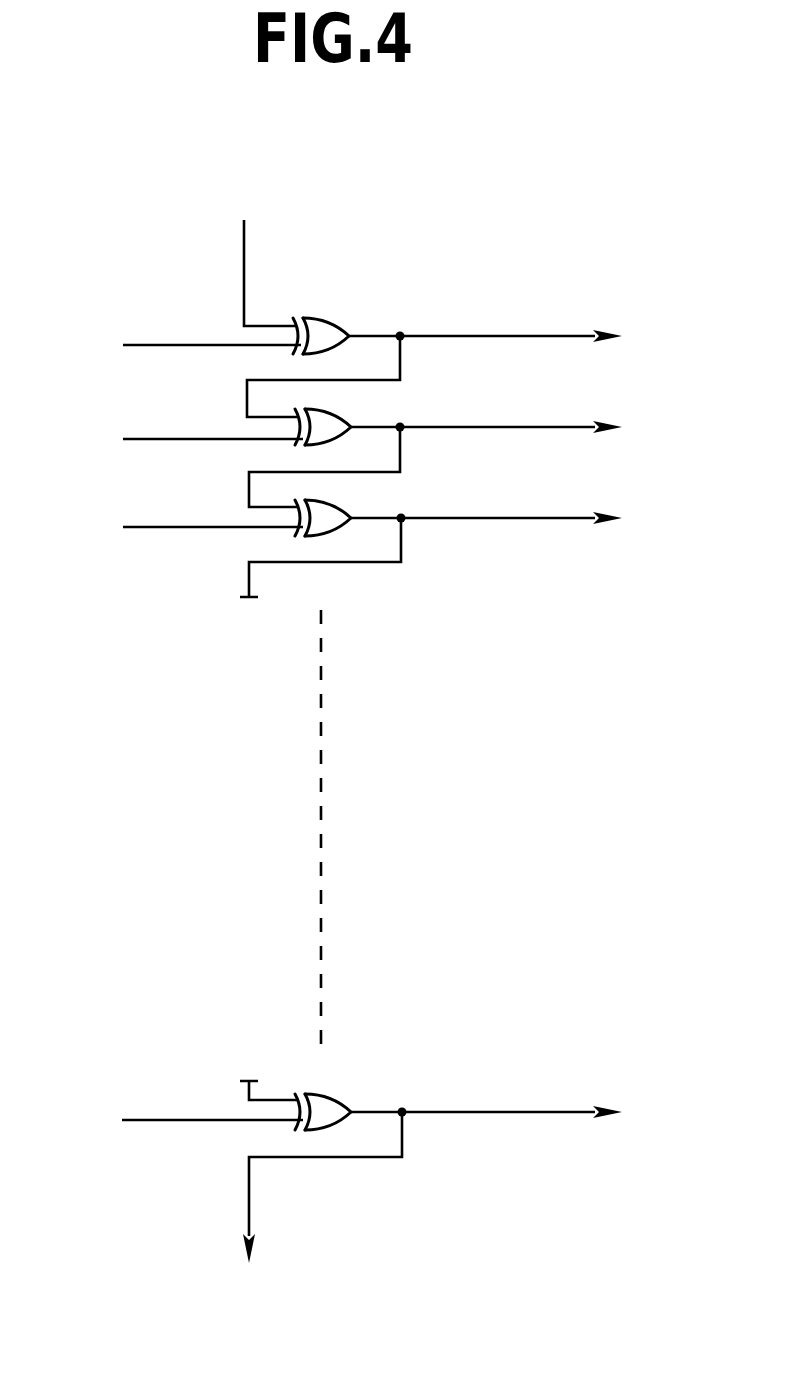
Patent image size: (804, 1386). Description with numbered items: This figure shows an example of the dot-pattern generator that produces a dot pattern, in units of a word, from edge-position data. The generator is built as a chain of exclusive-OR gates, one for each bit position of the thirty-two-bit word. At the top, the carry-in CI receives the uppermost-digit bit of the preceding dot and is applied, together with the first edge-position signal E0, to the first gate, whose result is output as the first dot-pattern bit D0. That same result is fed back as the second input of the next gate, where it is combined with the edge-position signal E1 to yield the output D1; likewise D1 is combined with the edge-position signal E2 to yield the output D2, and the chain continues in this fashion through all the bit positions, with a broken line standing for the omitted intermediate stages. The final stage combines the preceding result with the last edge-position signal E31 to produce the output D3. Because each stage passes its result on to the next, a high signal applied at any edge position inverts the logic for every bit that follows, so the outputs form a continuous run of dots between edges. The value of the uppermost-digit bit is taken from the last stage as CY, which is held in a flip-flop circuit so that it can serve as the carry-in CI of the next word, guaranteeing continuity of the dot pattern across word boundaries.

The carry-in input CI is at (262, 254).
The edge-position input bit 0 E0 is at (184, 343).
The edge-position input bit 1 E1 is at (185, 440).
The edge-position input bit 2 E2 is at (189, 528).
The edge-position input bit 31 E31 is at (183, 1120).
The dot-pattern output bit 0 D0 is at (511, 337).
The dot-pattern output bit 1 D1 is at (513, 427).
The dot-pattern output bit 2 D2 is at (514, 518).
The dot-pattern output bit for the last stage D3 is at (514, 1112).
The carry-out output CY is at (315, 1208).